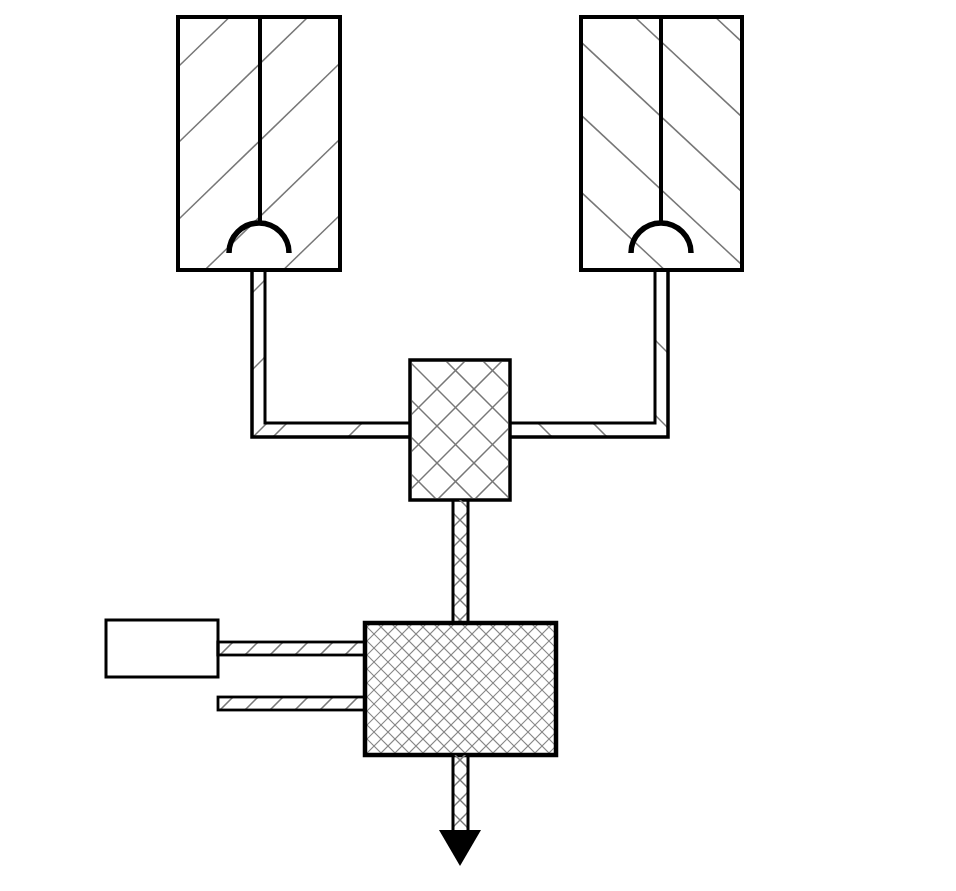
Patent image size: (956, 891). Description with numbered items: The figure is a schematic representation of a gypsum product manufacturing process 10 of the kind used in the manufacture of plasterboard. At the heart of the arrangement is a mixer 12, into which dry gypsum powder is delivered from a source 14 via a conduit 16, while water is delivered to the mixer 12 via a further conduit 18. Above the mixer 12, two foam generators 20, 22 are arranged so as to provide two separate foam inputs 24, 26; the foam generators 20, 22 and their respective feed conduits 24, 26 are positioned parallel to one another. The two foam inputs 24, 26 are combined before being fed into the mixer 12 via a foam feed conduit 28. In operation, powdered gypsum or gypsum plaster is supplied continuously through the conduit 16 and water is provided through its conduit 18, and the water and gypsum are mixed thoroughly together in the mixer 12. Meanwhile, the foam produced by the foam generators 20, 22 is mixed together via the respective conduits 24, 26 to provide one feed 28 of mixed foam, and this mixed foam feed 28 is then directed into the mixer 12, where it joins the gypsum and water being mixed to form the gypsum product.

The gypsum product manufacturing process 10 is at (96, 97).
The mixer 12 is at (557, 688).
The source 14 is at (148, 618).
The conduit 16 is at (290, 640).
The further conduit 18 is at (283, 712).
The foam generator 20 is at (178, 233).
The foam generator 22 is at (743, 170).
The foam input 24 is at (250, 323).
The foam input 26 is at (670, 322).
The foam feed conduit 28 is at (470, 551).